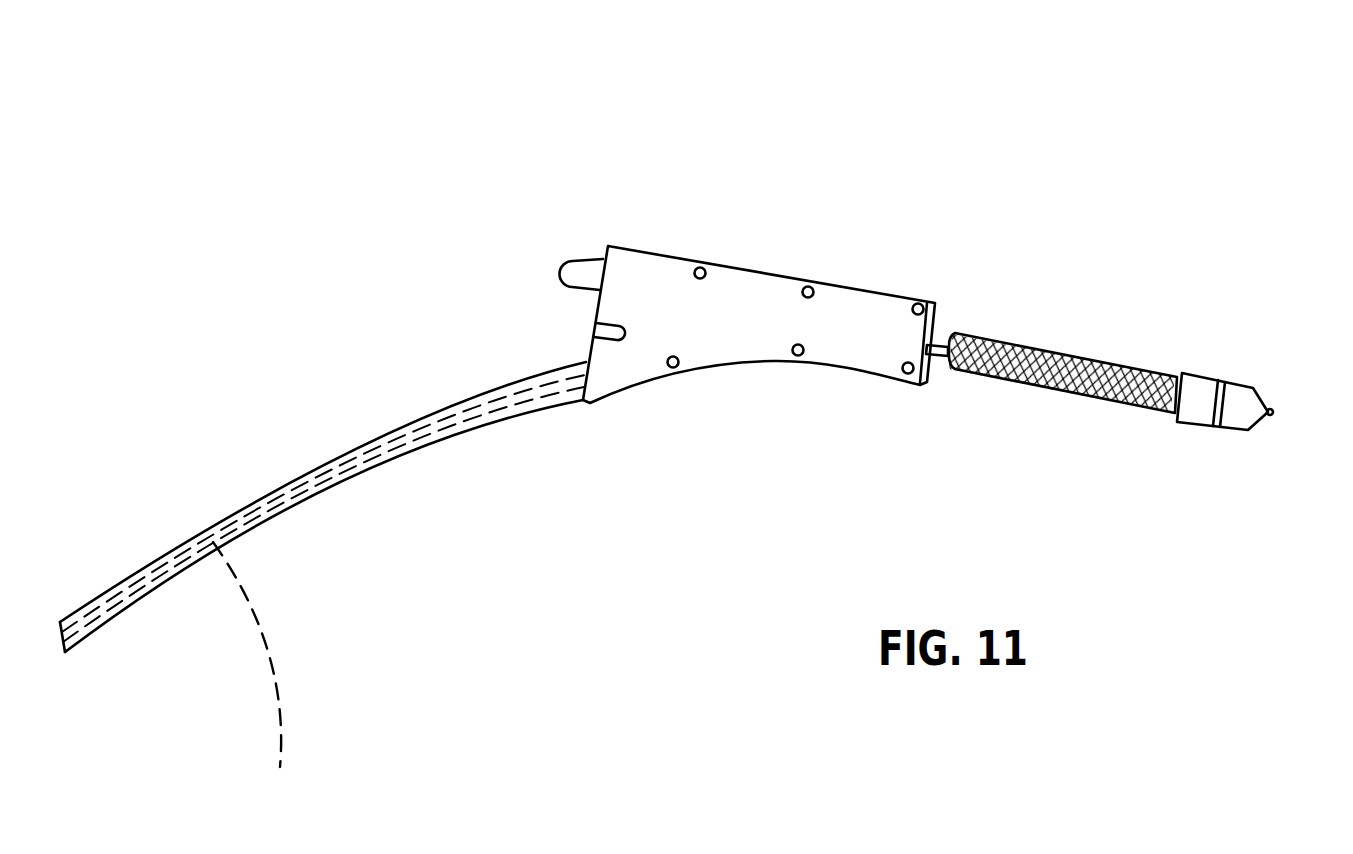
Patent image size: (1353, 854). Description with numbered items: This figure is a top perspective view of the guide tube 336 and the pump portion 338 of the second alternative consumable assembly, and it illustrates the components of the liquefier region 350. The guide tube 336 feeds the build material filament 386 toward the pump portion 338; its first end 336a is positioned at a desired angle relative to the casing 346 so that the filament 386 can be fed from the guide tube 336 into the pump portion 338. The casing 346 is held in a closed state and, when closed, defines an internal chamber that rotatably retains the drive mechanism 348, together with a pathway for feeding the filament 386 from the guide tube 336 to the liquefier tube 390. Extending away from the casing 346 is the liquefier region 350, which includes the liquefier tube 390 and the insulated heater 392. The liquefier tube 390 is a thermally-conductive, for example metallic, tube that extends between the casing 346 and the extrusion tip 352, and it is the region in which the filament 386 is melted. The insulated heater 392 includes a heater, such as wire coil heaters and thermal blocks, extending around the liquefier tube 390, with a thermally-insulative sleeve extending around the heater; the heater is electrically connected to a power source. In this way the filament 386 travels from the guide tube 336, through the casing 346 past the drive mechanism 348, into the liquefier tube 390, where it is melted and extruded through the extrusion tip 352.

The pump portion 338 is at (963, 95).
The guide tube 336 is at (275, 488).
The first end 336a is at (497, 425).
The casing 346 is at (740, 280).
The drive mechanism 348 is at (582, 272).
The liquefier region 350 is at (1058, 352).
The extrusion tip 352 is at (1240, 393).
The filament 386 is at (263, 670).
The liquefier tube 390 is at (935, 330).
The insulated heater 392 is at (1127, 405).